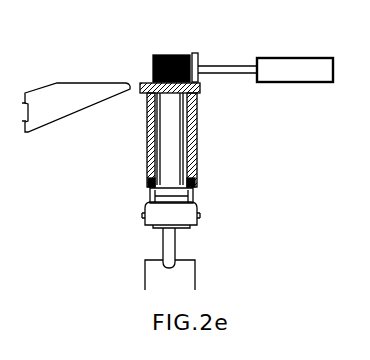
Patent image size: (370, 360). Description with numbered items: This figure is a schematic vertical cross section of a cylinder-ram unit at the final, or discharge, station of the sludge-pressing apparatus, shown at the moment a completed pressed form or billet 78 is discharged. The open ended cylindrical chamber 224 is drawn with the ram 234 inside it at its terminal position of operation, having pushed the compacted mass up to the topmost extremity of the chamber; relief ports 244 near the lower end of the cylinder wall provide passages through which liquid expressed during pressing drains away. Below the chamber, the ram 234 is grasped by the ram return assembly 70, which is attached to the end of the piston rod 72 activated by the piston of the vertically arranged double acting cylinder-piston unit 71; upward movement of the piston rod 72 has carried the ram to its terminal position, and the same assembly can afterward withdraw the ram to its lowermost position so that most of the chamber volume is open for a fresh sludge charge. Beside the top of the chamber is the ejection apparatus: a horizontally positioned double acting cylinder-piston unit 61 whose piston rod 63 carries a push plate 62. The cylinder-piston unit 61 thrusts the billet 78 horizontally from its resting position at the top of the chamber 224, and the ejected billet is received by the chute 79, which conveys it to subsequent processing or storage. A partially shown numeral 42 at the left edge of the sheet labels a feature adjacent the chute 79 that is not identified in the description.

The pressed form / billet 78 is at (171, 55).
The push plate 62 is at (198, 55).
The piston rod 63 is at (241, 66).
The double acting cylinder-piston unit 61 is at (281, 77).
The chute 79 is at (67, 106).
The support bracket 42 is at (21, 104).
The chamber 224 is at (198, 135).
The ram 234 is at (183, 172).
The relief port 244 is at (150, 185).
The ram return assembly 70 is at (199, 228).
The piston rod 72 is at (177, 258).
The double acting cylinder-piston unit 71 is at (177, 289).